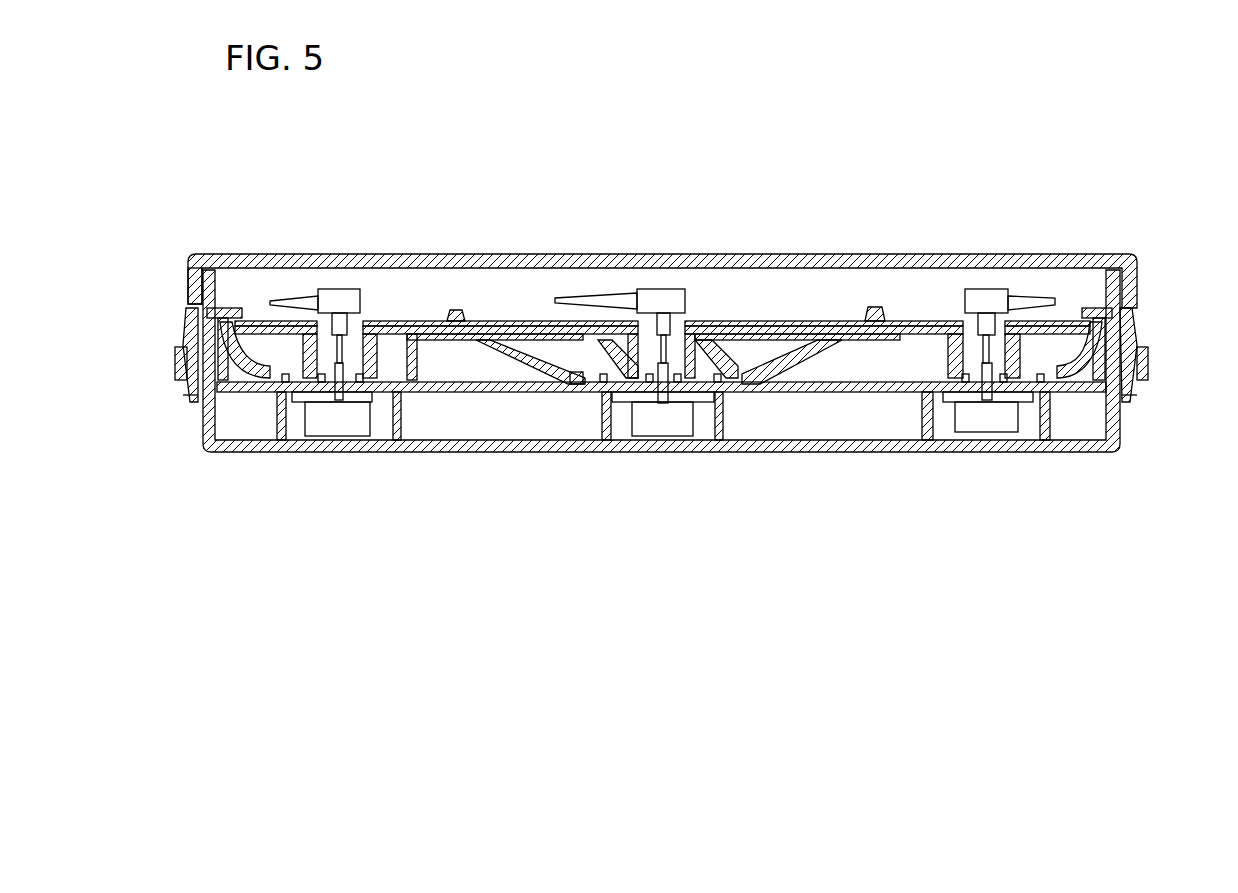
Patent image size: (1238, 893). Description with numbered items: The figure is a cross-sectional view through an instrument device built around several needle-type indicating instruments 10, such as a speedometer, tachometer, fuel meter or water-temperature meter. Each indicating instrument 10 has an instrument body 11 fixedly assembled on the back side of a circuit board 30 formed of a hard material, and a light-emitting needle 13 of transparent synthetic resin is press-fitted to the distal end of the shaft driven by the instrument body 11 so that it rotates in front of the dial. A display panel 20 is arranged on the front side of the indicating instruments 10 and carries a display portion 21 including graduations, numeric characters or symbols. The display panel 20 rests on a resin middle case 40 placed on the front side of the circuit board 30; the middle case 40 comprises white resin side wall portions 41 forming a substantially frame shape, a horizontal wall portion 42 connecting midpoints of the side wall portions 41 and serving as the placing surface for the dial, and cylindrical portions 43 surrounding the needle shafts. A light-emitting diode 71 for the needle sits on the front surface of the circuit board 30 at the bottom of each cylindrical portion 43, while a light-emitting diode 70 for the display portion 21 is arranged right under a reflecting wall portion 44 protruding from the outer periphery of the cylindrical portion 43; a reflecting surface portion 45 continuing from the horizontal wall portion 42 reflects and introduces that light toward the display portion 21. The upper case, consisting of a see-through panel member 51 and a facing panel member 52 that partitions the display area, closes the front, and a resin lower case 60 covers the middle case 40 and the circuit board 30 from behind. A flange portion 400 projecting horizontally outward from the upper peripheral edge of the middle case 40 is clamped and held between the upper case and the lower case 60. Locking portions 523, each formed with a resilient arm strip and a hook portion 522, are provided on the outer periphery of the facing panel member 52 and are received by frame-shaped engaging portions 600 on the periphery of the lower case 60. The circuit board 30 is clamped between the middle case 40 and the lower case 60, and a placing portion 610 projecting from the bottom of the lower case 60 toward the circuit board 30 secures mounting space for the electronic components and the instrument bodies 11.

The needle-type indicating instrument 10 is at (327, 282).
The instrument body 11 is at (337, 420).
The needle 13 is at (1044, 230).
The display panel 20 is at (927, 330).
The display portion 21 is at (537, 322).
The circuit board 30 is at (750, 392).
The middle case 40 is at (438, 413).
The side wall portion 41 is at (797, 436).
The horizontal wall portion 42 is at (452, 320).
The cylindrical portion 43 is at (483, 299).
The reflecting wall portion 44 is at (706, 350).
The reflecting surface portion 45 is at (525, 360).
The see-through panel member 51 is at (662, 238).
The facing panel member 52 is at (210, 246).
The lower case 60 is at (980, 447).
The light-emitting diode 70 is at (288, 400).
The light-emitting diode for needle 71 is at (358, 402).
The flange portion 400 is at (210, 320).
The hook portion 522 is at (192, 387).
The locking portion 523 is at (180, 407).
The frame-shaped engaging portion 600 is at (178, 365).
The placing portion 610 is at (228, 413).